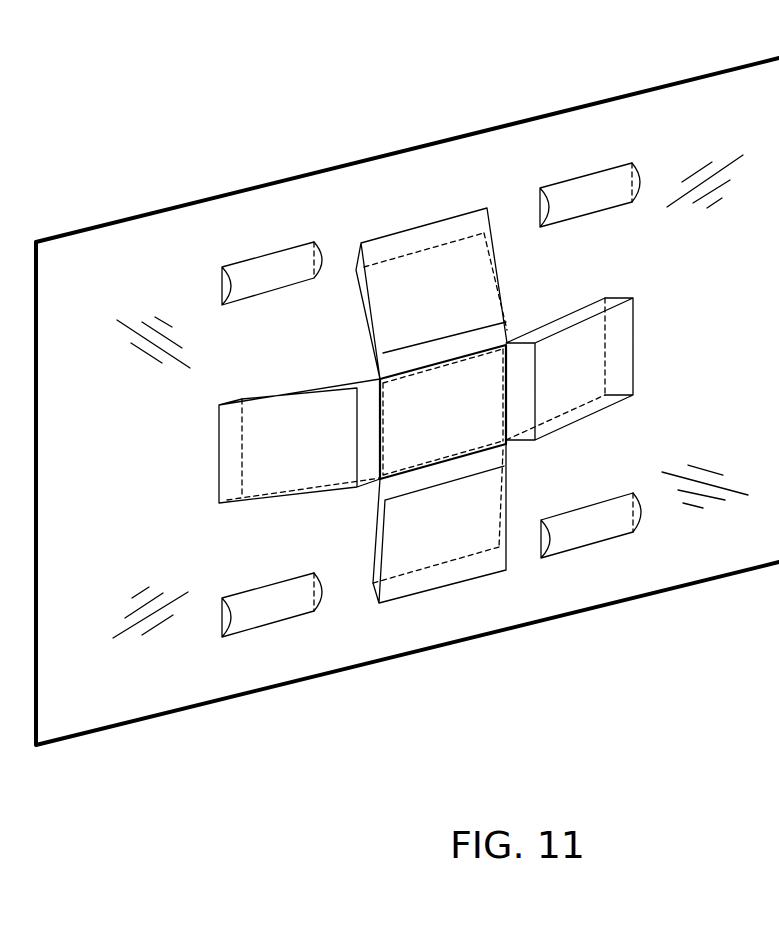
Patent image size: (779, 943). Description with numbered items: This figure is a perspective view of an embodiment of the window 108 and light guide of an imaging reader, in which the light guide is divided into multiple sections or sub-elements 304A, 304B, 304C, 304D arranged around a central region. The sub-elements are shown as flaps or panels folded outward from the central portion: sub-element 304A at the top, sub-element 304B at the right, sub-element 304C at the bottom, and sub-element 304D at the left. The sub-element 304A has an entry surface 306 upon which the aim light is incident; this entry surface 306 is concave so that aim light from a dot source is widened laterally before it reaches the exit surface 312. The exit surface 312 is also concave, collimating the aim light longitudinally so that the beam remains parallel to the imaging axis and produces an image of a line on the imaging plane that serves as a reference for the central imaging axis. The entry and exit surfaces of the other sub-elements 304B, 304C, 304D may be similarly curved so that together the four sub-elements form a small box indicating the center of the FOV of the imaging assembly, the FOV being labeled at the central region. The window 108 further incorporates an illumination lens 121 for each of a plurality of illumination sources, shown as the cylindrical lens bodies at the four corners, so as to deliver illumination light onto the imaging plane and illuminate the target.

The window 108 is at (602, 80).
The illumination lens 121 is at (572, 188).
The entry surface 306 is at (388, 276).
The exit surface 312 is at (467, 345).
The sub-element 304A is at (393, 332).
The sub-element 304B is at (587, 365).
The sub-element 304C is at (390, 555).
The sub-element 304D is at (260, 463).
The field of view FOV is at (473, 452).